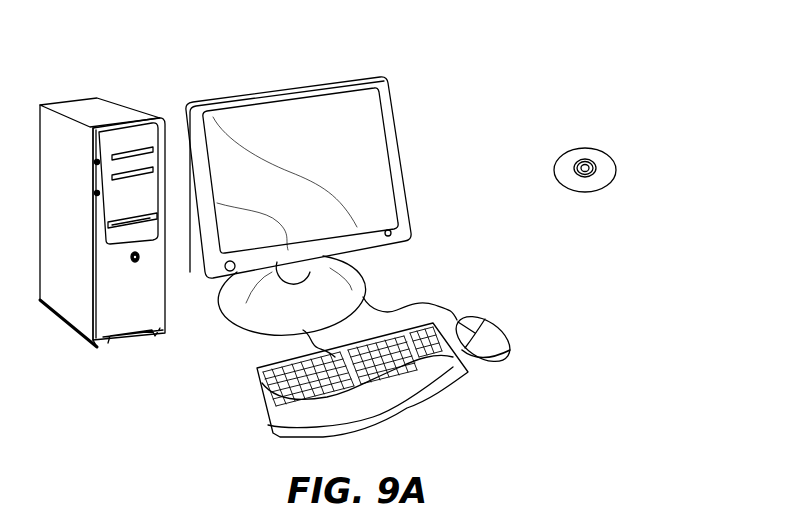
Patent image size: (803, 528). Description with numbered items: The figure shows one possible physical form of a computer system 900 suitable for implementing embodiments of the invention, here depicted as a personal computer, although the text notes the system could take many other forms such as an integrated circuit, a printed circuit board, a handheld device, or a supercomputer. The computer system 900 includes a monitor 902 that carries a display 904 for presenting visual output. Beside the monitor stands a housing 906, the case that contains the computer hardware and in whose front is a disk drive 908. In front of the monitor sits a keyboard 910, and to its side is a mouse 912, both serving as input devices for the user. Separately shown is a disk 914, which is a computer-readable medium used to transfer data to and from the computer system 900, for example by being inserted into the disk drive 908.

The computer system 900 is at (515, 62).
The monitor 902 is at (405, 173).
The display 904 is at (360, 118).
The housing 906 is at (87, 108).
The disk drive 908 is at (148, 222).
The keyboard 910 is at (267, 408).
The mouse 912 is at (498, 332).
The disk 914 is at (597, 148).